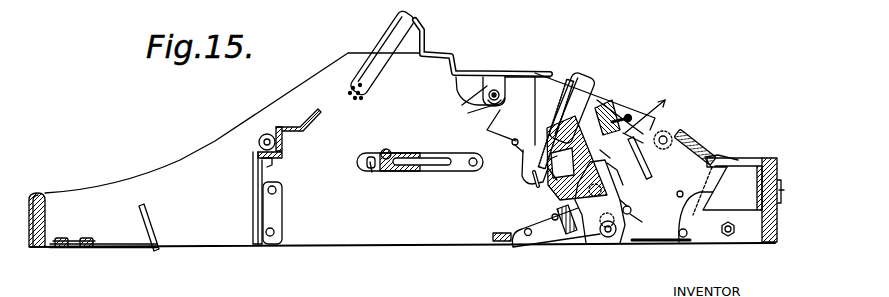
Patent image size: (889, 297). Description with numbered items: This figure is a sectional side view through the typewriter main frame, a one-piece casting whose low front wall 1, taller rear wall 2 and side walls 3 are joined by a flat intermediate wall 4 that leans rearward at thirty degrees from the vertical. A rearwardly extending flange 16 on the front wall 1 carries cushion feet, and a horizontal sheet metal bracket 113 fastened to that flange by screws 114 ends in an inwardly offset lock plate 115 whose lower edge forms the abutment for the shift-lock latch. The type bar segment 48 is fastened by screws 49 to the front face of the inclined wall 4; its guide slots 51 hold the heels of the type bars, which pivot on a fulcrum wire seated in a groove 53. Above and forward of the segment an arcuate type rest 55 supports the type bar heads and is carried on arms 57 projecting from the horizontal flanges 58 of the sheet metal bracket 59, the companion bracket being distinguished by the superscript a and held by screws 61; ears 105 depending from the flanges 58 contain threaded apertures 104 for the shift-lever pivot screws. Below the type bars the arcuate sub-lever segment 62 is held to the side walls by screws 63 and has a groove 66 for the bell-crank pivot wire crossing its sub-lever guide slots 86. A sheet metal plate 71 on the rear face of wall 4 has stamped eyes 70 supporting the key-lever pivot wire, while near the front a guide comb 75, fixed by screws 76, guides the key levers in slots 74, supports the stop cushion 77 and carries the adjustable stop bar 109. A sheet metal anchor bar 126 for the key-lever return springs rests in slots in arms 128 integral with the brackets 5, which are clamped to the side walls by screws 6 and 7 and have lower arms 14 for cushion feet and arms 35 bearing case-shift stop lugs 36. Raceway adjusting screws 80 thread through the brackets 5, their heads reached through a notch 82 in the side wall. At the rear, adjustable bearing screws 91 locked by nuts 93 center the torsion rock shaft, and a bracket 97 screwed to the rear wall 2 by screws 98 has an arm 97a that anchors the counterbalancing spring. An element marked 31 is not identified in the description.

The front wall 1 is at (41, 248).
The rear wall 2 is at (762, 244).
The side walls 3 is at (416, 238).
The intermediate wall 4 is at (550, 185).
The sheet metal brackets 5 is at (627, 232).
The clamping screw 6 is at (681, 191).
The clamping screws 7 is at (630, 115).
The arm 14 is at (643, 243).
The flange 16 is at (77, 248).
The bar 31 is at (710, 157).
The arms 35 is at (640, 157).
The stop lugs 36 is at (631, 184).
The type bar segment 48 is at (570, 80).
The screws 49 is at (610, 105).
The guide slots 51 is at (528, 180).
The groove 53 is at (528, 183).
The arcuate type rest 55 is at (365, 97).
The arms 57 is at (425, 38).
The flanges 58 is at (466, 70).
The sheet metal bracket 59 is at (510, 106).
The screws 61 is at (500, 90).
The arcuate sub-lever segment 62 is at (418, 171).
The screws 63 is at (463, 171).
The groove 66 is at (367, 165).
The eyes 70 is at (656, 110).
The sheet metal plate 71 is at (611, 163).
The slots 74 is at (260, 212).
The sheet metal guide comb 75 is at (266, 134).
The screws 76 is at (273, 232).
The printing key-lever stop cushion 77 is at (267, 167).
The adjusting screws 80 is at (678, 134).
The notch 82 is at (667, 122).
The sub-lever guide slots 86 is at (373, 171).
The adjustable bearing screws 91 is at (723, 238).
The lock nuts 93 is at (740, 235).
The sheet metal bracket 97 is at (755, 194).
The arm 97a is at (749, 153).
The screws 98 is at (781, 200).
The threaded apertures 104 is at (458, 120).
The ears 105 is at (457, 101).
The stop bar 109 is at (253, 180).
The horizontal sheet metal bracket 113 is at (124, 249).
The screws 114 is at (83, 238).
The lock plate 115 is at (152, 228).
The sheet metal anchor bar 126 is at (500, 241).
The arms 128 is at (557, 233).
The companion sheet metal bracket (59a) a is at (509, 92).